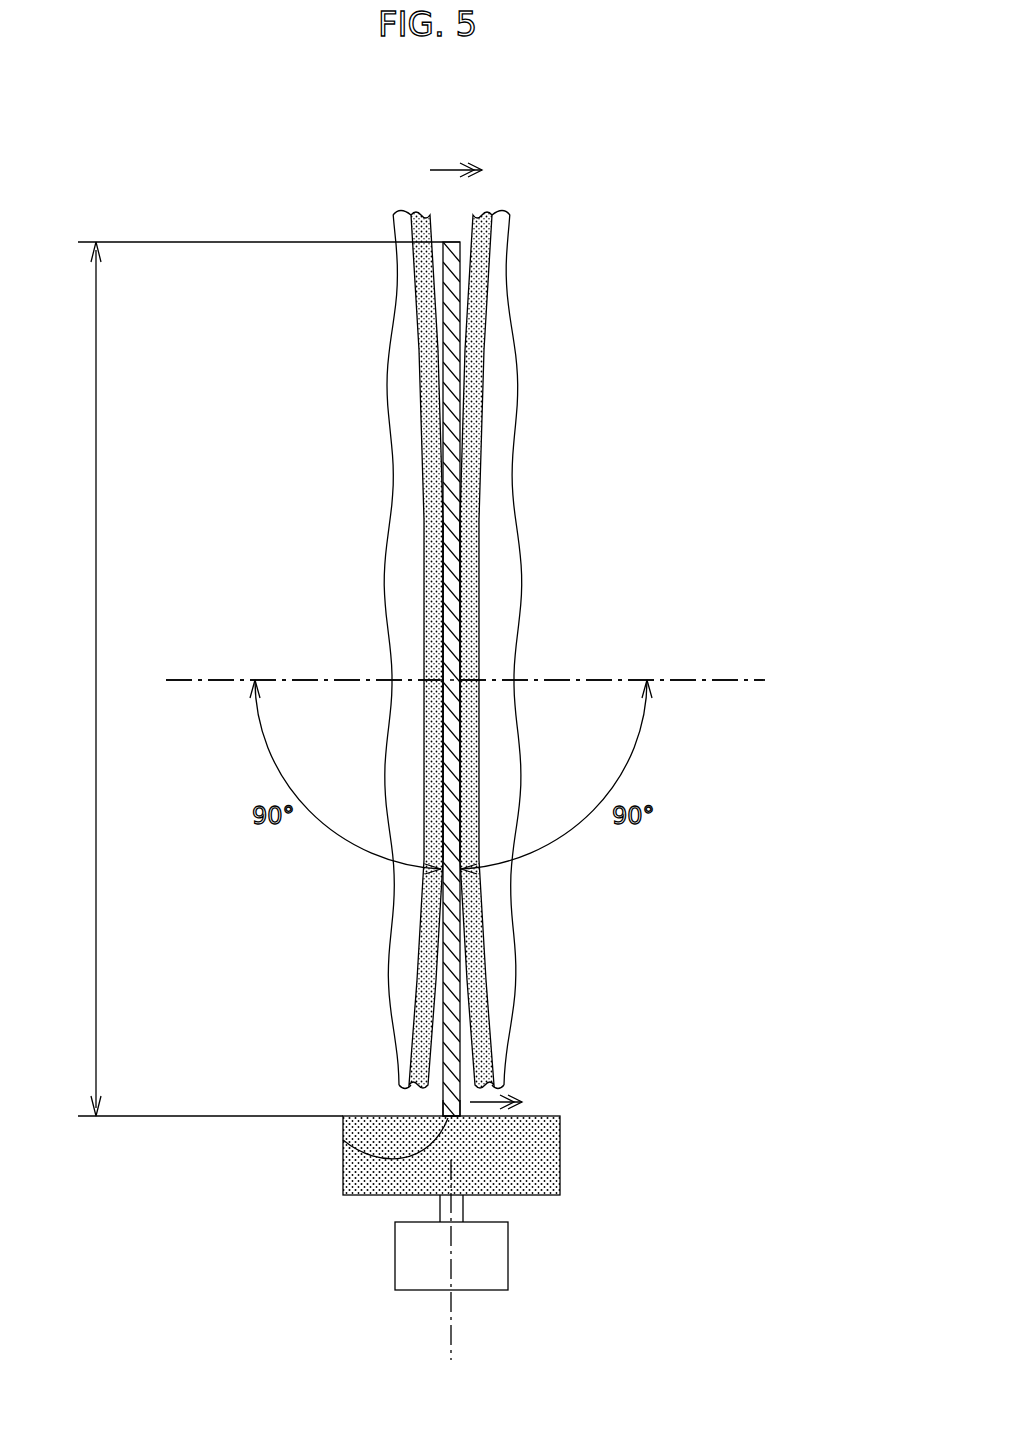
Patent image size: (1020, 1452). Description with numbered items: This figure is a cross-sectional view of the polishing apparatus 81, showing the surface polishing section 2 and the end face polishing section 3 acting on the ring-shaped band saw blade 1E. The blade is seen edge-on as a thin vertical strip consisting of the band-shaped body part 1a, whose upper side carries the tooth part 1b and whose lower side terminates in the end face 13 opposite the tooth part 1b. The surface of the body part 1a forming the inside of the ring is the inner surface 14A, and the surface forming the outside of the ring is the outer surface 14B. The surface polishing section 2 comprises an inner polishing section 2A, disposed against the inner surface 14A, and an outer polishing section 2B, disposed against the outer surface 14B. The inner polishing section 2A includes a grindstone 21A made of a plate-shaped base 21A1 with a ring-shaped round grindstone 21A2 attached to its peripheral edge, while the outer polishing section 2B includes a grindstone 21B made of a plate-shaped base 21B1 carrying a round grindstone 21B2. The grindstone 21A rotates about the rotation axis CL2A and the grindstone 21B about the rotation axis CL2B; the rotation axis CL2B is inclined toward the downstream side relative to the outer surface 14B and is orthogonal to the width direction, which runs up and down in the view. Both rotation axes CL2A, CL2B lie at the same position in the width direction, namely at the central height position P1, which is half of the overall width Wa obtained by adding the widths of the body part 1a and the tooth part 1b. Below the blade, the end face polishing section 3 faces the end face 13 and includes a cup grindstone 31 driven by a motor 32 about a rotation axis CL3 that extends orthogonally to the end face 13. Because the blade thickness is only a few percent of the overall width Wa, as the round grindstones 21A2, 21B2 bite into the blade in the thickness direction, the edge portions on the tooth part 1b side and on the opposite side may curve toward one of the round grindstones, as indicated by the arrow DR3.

The body part 1a is at (460, 312).
The tooth part 1b is at (452, 241).
The ring-shaped band saw blade 1E is at (460, 1037).
The surface polishing section 2 is at (499, 712).
The inner polishing section 2A is at (313, 602).
The outer polishing section 2B is at (610, 601).
The grindstone 21A is at (351, 602).
The plate-shaped base 21A1 is at (405, 320).
The round grindstone 21A2 is at (427, 300).
The grindstone 21B is at (548, 601).
The plate-shaped base 21B1 is at (497, 268).
The round grindstone 21B2 is at (497, 243).
The end face 13 is at (343, 1140).
The inner surface 14A is at (443, 392).
The outer surface 14B is at (470, 390).
The end face polishing section 3 is at (509, 1250).
The cup grindstone 31 is at (560, 1150).
The motor 32 is at (425, 1290).
The polishing apparatus 81 is at (668, 122).
The rotation axis CL2A is at (222, 680).
The rotation axis CL2B is at (736, 680).
The rotation axis CL3 is at (452, 1312).
The height position P1 is at (485, 684).
The arrow DR3 is at (445, 170).
The overall width Wa is at (247, 679).